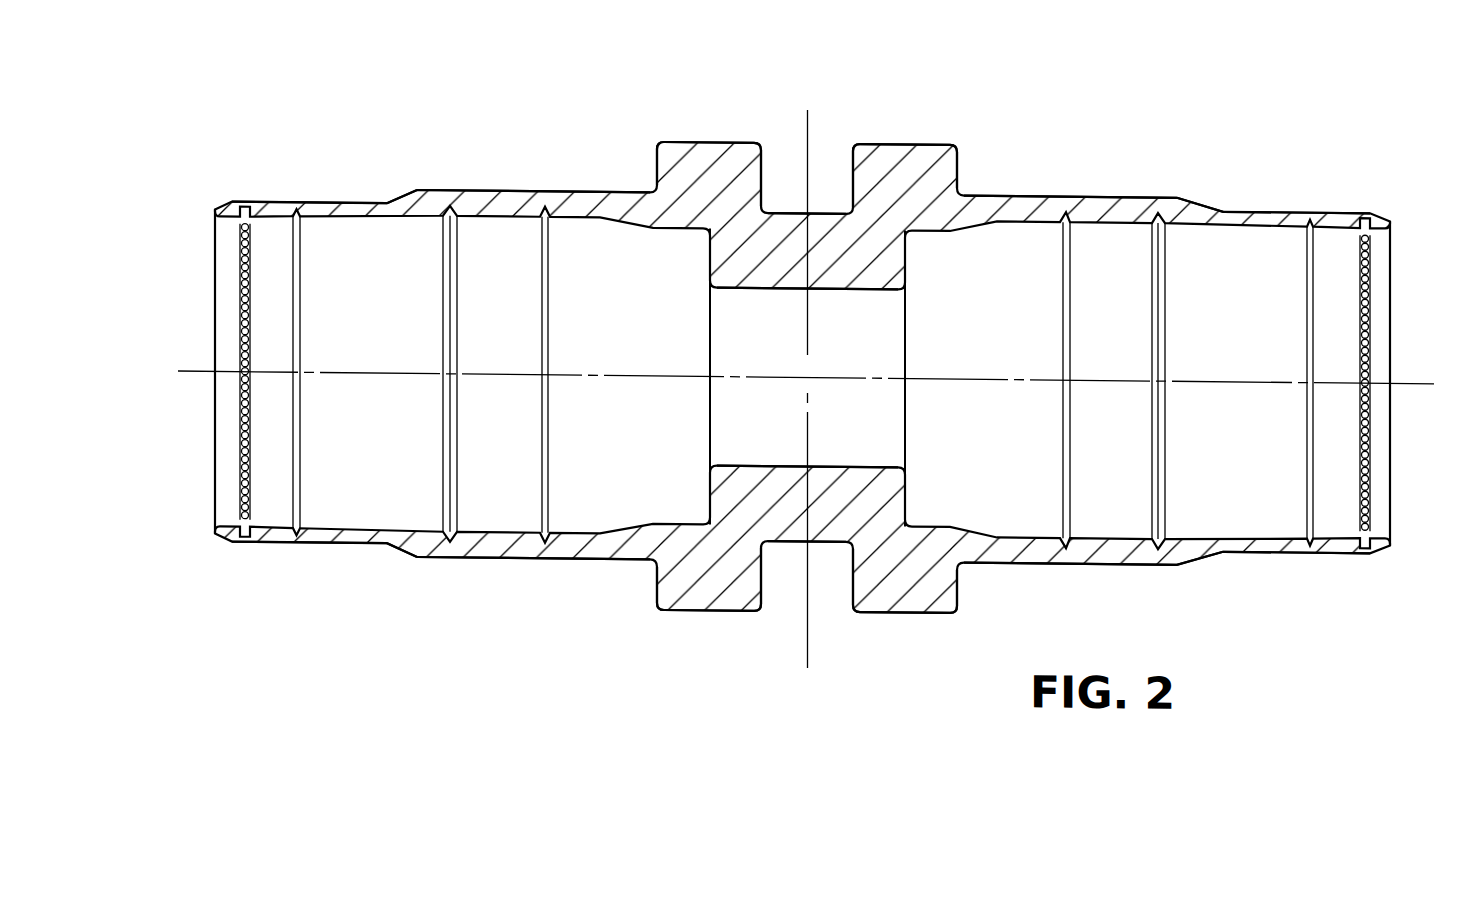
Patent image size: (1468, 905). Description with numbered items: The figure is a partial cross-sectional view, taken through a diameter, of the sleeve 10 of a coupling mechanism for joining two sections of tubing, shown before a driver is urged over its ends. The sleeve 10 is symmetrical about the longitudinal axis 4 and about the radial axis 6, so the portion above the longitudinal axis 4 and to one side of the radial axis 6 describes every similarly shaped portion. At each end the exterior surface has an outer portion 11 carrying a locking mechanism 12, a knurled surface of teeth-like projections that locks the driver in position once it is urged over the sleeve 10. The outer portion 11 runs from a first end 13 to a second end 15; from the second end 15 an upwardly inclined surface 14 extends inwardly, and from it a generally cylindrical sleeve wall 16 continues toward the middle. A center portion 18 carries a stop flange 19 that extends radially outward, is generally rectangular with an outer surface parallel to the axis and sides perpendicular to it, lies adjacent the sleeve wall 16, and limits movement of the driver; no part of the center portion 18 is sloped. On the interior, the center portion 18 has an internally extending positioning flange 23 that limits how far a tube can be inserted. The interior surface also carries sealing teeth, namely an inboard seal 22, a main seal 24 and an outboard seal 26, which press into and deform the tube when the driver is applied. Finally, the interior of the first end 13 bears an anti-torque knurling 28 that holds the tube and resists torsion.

The longitudinal axis 4 is at (1426, 378).
The radial axis 6 is at (807, 660).
The sleeve 10 is at (974, 116).
The outer portion 11 is at (276, 208).
The locking mechanism 12 is at (348, 208).
The first end 13 is at (215, 213).
The upwardly inclined surface 14 is at (404, 200).
The second end 15 is at (372, 208).
The generally cylindrical sleeve wall 16 is at (573, 194).
The center portion 18 is at (811, 263).
The stop flange 19 is at (697, 144).
The inboard seal 22 is at (548, 222).
The positioning flange 23 is at (765, 288).
The main seal 24 is at (455, 222).
The outboard seal 26 is at (299, 223).
The anti-torque knurling 28 is at (243, 322).